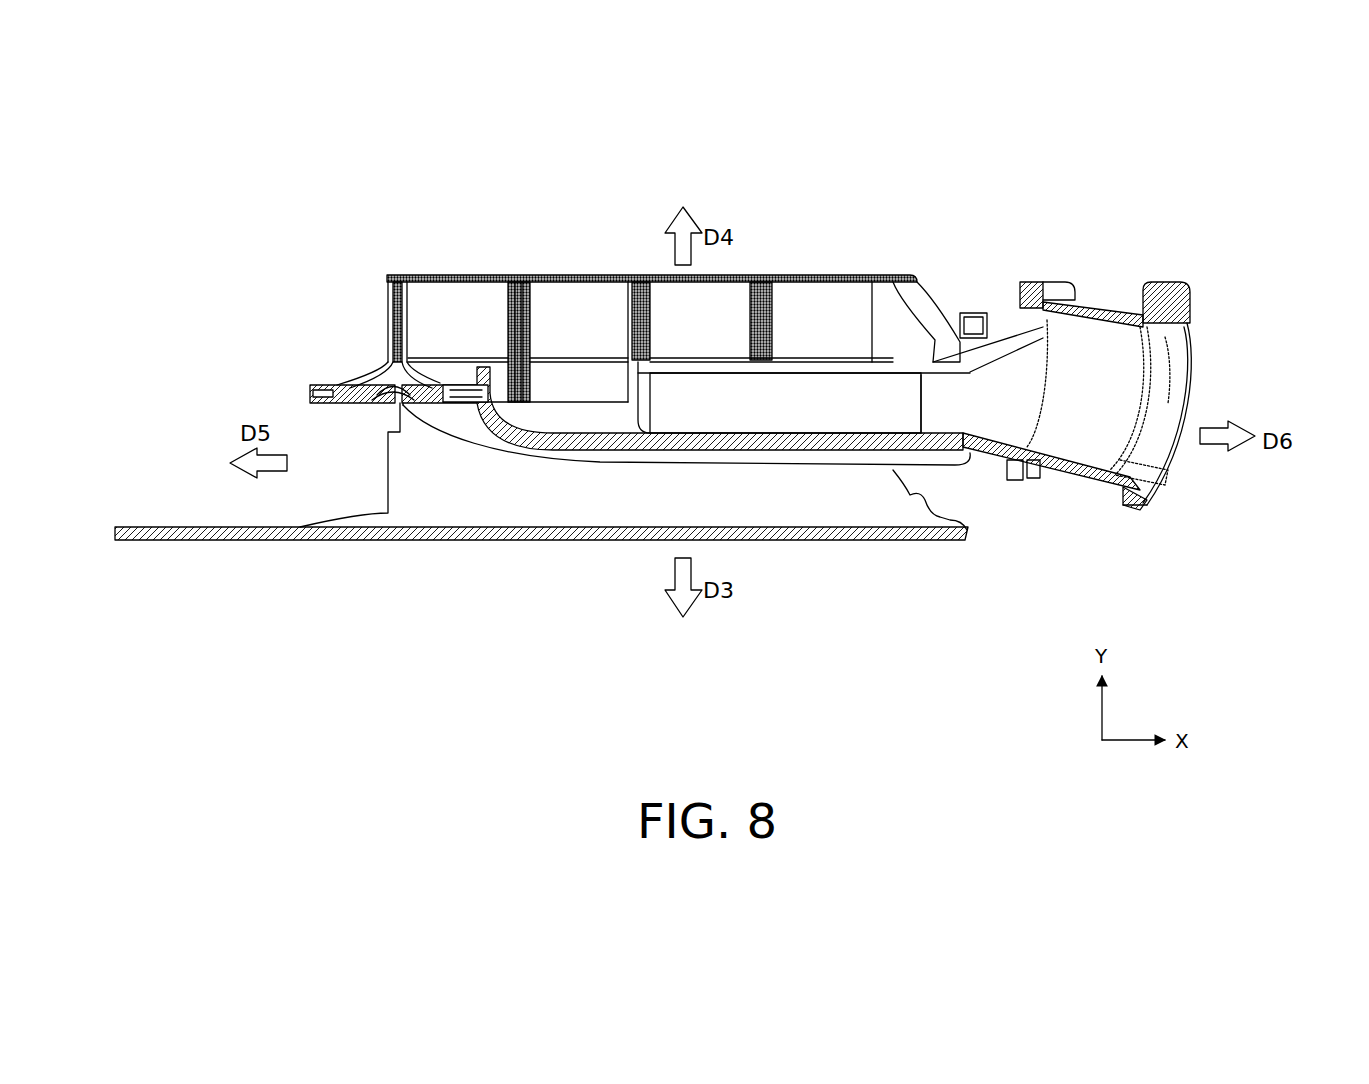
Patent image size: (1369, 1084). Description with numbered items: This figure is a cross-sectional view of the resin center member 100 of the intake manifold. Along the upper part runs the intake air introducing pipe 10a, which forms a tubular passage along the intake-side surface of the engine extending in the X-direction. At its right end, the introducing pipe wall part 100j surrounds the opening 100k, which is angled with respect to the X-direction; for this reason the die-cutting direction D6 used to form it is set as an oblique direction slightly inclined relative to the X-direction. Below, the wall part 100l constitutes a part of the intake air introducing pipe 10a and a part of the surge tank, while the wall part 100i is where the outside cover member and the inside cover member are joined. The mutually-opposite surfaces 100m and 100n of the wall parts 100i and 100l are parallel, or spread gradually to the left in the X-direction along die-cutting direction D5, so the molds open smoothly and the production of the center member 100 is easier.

The center member 100 is at (1083, 303).
The intake air introducing pipe 10a is at (890, 393).
The wall part 100i is at (288, 544).
The introducing pipe wall part 100j is at (1162, 275).
The opening 100k is at (1097, 407).
The wall part 100l is at (775, 425).
The opposite surface 100m is at (727, 523).
The opposite surface 100n is at (658, 462).